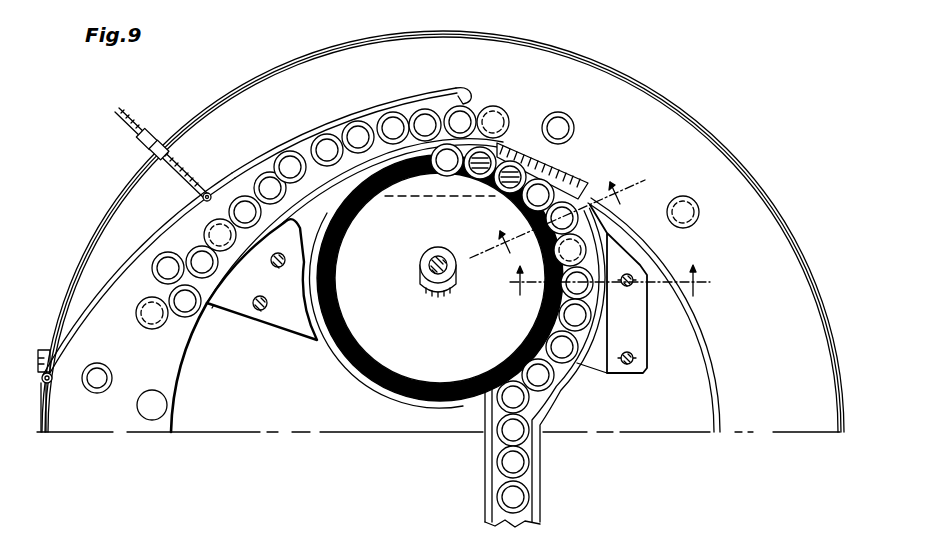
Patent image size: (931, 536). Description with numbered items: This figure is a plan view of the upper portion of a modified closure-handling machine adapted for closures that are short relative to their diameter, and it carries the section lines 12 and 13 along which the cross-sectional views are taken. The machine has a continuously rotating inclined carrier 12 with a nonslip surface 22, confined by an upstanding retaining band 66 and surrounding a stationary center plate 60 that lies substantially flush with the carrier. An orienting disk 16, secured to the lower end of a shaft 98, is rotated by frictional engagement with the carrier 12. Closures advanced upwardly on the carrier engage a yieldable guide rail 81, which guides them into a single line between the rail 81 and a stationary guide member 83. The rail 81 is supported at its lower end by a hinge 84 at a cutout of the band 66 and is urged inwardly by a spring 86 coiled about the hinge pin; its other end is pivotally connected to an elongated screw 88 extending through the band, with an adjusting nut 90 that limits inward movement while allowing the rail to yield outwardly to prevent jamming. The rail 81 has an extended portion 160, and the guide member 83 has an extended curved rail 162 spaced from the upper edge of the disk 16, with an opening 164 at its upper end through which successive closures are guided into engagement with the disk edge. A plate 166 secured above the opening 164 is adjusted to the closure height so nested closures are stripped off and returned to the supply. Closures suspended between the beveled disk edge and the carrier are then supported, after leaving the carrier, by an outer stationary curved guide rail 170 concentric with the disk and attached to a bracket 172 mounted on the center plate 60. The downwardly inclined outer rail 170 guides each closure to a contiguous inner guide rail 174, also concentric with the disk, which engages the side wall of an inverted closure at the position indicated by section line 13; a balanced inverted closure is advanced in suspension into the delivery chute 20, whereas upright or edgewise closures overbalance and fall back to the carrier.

The rotary carrier 12 is at (97, 263).
The section line 13- 13 is at (610, 281).
The orienting disk 16 is at (353, 367).
The delivery chute 20 is at (542, 485).
The nonslip surface 22 is at (175, 378).
The circular metal plate 60 is at (438, 419).
The retaining band 66 is at (692, 118).
The yieldable guide rail 81 is at (187, 220).
The stationary guide member 83 is at (209, 300).
The hinge 84 is at (52, 383).
The spring 86 is at (65, 340).
The elongated screw 88 is at (120, 120).
The adjusting nut 90 is at (148, 132).
The shaft 98 is at (437, 253).
The extended portion 160 is at (410, 100).
The extended curved rail 162 is at (330, 128).
The opening 164 is at (483, 112).
The plate 166 is at (455, 175).
The outer stationary curved guide rail 170 is at (570, 163).
The bracket 172 is at (600, 363).
The inner guide rail 174 is at (595, 253).